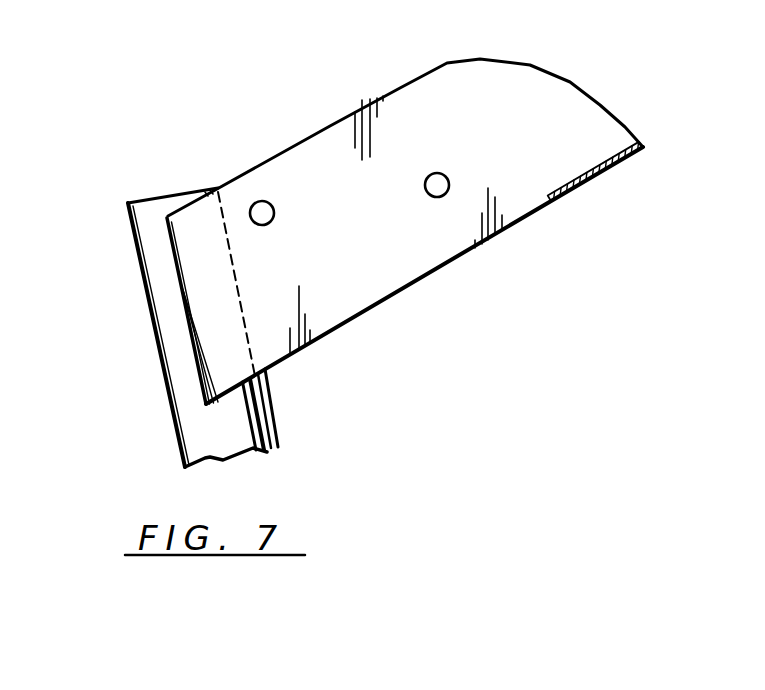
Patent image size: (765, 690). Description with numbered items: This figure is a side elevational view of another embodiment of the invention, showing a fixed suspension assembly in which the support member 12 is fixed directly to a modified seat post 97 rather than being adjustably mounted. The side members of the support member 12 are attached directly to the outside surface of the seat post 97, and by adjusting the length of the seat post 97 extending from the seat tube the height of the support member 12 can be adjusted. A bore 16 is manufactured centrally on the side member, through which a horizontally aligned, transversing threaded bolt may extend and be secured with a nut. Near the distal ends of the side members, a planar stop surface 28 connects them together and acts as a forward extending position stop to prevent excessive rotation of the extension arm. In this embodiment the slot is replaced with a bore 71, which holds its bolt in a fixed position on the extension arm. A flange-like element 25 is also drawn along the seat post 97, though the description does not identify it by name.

The support member 12 is at (447, 63).
The bore 16 is at (449, 189).
The bore 71 is at (252, 204).
The flange 25 is at (208, 348).
The planar stop surface 28 is at (602, 180).
The modified seat post 97 is at (138, 250).